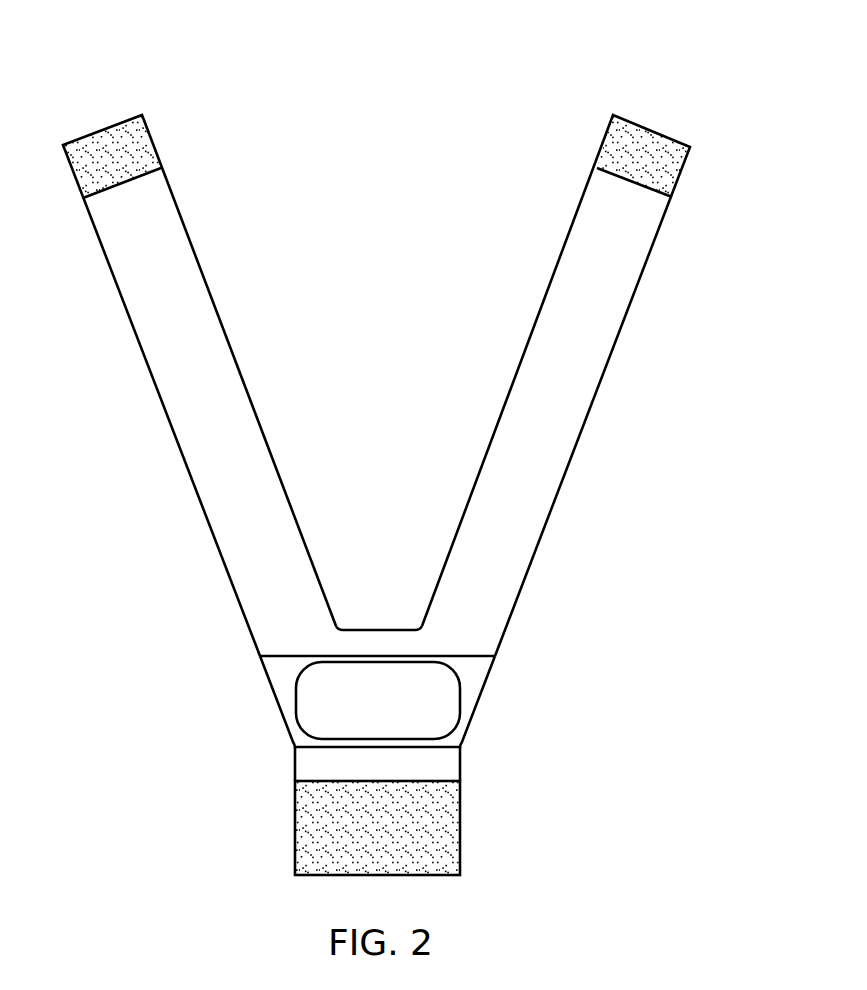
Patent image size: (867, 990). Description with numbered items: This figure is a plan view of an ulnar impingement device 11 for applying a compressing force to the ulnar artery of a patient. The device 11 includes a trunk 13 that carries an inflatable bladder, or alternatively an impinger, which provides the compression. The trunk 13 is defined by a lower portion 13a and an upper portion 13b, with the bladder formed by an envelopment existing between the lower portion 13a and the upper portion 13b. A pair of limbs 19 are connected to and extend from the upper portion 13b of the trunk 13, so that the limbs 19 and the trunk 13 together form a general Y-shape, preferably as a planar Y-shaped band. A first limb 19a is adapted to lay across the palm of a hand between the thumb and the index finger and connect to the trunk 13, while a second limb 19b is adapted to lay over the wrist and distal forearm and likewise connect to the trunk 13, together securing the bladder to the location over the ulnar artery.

The device 11 is at (520, 90).
The pair of limbs 19 is at (495, 425).
The first limb 19a is at (112, 277).
The second limb 19b is at (625, 318).
The trunk 13 is at (461, 764).
The lower portion 13a is at (461, 862).
The upper portion 13b is at (478, 669).